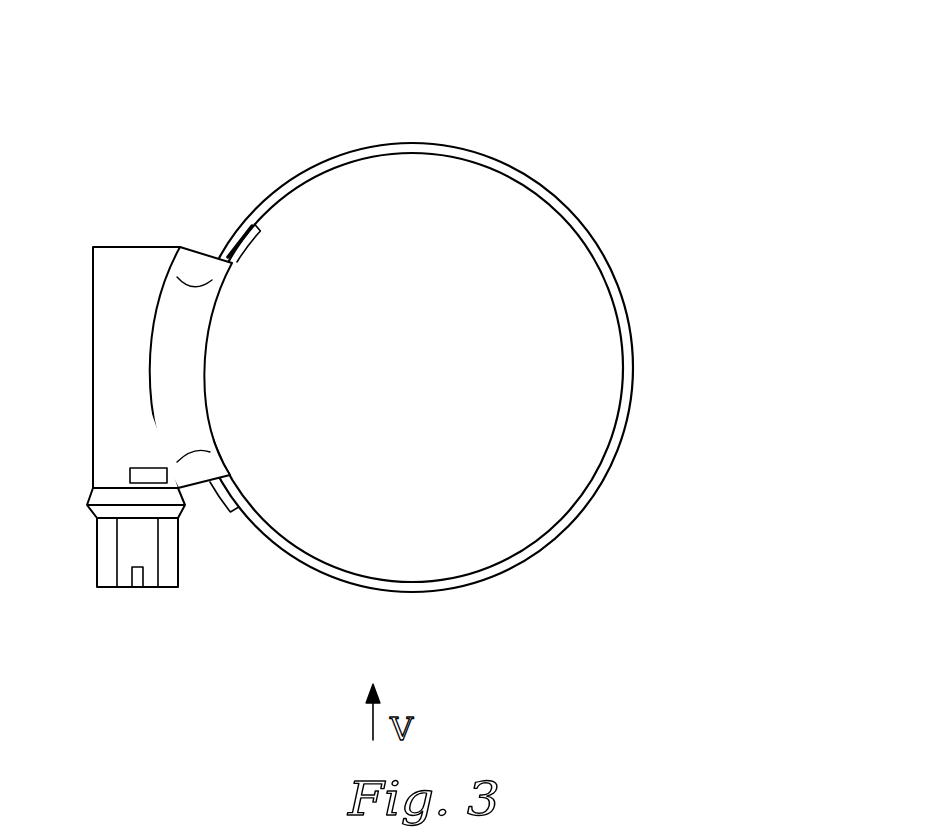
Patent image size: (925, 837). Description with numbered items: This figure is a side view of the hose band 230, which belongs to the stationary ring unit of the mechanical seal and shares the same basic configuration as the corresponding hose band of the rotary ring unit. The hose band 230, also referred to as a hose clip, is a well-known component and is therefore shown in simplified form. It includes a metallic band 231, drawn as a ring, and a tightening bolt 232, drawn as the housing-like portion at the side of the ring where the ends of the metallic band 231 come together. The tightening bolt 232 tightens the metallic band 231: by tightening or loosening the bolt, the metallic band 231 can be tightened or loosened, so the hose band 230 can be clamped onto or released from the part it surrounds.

The hose band 230 is at (431, 338).
The metallic band 231 is at (627, 307).
The tightening bolt 232 is at (103, 540).